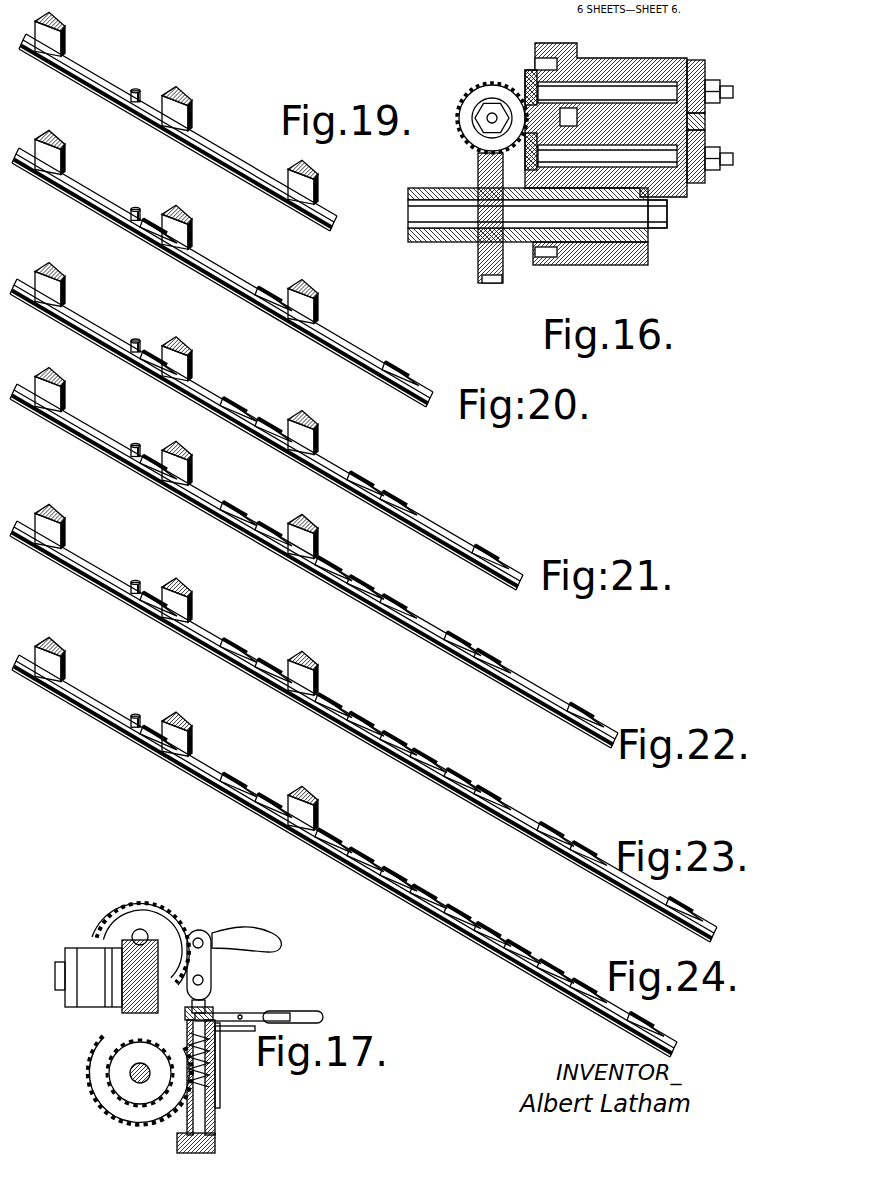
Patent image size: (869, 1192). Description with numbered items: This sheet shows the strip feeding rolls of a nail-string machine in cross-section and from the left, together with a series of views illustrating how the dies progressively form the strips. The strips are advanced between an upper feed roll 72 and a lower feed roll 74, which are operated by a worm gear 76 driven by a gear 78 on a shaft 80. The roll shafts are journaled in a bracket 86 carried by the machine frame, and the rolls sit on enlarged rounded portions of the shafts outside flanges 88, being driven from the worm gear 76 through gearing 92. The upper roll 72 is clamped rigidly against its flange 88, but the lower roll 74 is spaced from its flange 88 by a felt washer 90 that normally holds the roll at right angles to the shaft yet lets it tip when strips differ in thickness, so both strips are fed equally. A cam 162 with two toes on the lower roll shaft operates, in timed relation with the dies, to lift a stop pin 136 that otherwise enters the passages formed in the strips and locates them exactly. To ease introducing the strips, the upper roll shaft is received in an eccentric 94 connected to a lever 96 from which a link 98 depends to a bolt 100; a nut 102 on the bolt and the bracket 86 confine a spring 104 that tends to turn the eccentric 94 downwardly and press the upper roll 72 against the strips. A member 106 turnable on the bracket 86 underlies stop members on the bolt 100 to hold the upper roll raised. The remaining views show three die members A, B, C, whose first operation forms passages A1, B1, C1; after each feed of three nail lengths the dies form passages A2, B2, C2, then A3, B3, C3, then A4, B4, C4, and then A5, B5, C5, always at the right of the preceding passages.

In FIG. 16, the upper feed roll 72 is at (708, 78).
In FIG. 16, the lower feed roll 74 is at (700, 185).
In FIG. 16, the worm gear 76 is at (485, 278).
In FIG. 17, the worm gear 76 is at (92, 1088).
In FIG. 16, the gear 78 is at (485, 88).
In FIG. 17, the gear 78 is at (112, 1005).
In FIG. 16, the shaft 80 is at (490, 120).
In FIG. 16, the bracket 86 is at (597, 60).
In FIG. 16, the flanges 88 is at (690, 62).
In FIG. 16, the felt washer 90 is at (705, 120).
In FIG. 16, the gearing 92 is at (527, 78).
In FIG. 16, the eccentric 94 is at (622, 72).
In FIG. 16, the cam 162 is at (614, 207).
In FIG. 19, the stop pin 136 is at (141, 90).
In FIG. 20, the stop pin 136 is at (140, 208).
In FIG. 21, the stop pin 136 is at (140, 340).
In FIG. 22, the stop pin 136 is at (157, 439).
In FIG. 23, the stop pin 136 is at (140, 582).
In FIG. 24, the stop pin 136 is at (140, 716).
In FIG. 17, the lever 96 is at (277, 941).
In FIG. 17, the link 98 is at (212, 966).
In FIG. 17, the bolt 100 is at (205, 1152).
In FIG. 17, the nut 102 is at (216, 1123).
In FIG. 17, the spring 104 is at (215, 1090).
In FIG. 17, the member 106 is at (263, 1016).
In FIG. 19, the die member A is at (66, 40).
In FIG. 20, the die member A is at (66, 150).
In FIG. 21, the die member A is at (66, 282).
In FIG. 22, the die member A is at (66, 388).
In FIG. 23, the die member A is at (66, 525).
In FIG. 24, the die member A is at (66, 656).
In FIG. 19, the die member B is at (190, 103).
In FIG. 20, the die member B is at (190, 222).
In FIG. 21, the die member B is at (190, 354).
In FIG. 22, the die member B is at (190, 459).
In FIG. 23, the die member B is at (190, 596).
In FIG. 24, the die member B is at (190, 730).
In FIG. 19, the die member C is at (316, 180).
In FIG. 20, the die member C is at (316, 298).
In FIG. 21, the die member C is at (316, 428).
In FIG. 22, the die member C is at (316, 532).
In FIG. 23, the die member C is at (316, 669).
In FIG. 24, the die member C is at (316, 804).
In FIG. 20, the passage A1 is at (155, 224).
In FIG. 21, the passage A1 is at (235, 402).
In FIG. 22, the passage A1 is at (330, 561).
In FIG. 23, the passage A1 is at (425, 753).
In FIG. 24, the passage A1 is at (519, 944).
In FIG. 21, the passage A2 is at (155, 355).
In FIG. 22, the passage A2 is at (235, 506).
In FIG. 23, the passage A2 is at (330, 698).
In FIG. 24, the passage A2 is at (425, 889).
In FIG. 22, the passage A3 is at (155, 460).
In FIG. 23, the passage A3 is at (235, 643).
In FIG. 24, the passage A3 is at (330, 833).
In FIG. 23, the passage A4 is at (155, 597).
In FIG. 24, the passage A4 is at (235, 777).
In FIG. 24, the passage A5 is at (155, 730).
In FIG. 20, the passage B1 is at (268, 291).
In FIG. 21, the passage B1 is at (362, 476).
In FIG. 22, the passage B1 is at (459, 636).
In FIG. 23, the passage B1 is at (552, 827).
In FIG. 24, the passage B1 is at (642, 1017).
In FIG. 21, the passage B2 is at (270, 422).
In FIG. 22, the passage B2 is at (362, 580).
In FIG. 23, the passage B2 is at (459, 773).
In FIG. 24, the passage B2 is at (552, 964).
In FIG. 22, the passage B3 is at (270, 526).
In FIG. 23, the passage B3 is at (362, 717).
In FIG. 24, the passage B3 is at (459, 909).
In FIG. 23, the passage B4 is at (270, 663).
In FIG. 24, the passage B4 is at (362, 852).
In FIG. 24, the passage B5 is at (270, 798).
In FIG. 20, the passage C1 is at (398, 368).
In FIG. 21, the passage C1 is at (488, 551).
In FIG. 22, the passage C1 is at (582, 708).
In FIG. 23, the passage C1 is at (681, 902).
In FIG. 21, the passage C2 is at (395, 496).
In FIG. 22, the passage C2 is at (489, 654).
In FIG. 23, the passage C2 is at (585, 846).
In FIG. 22, the passage C3 is at (395, 599).
In FIG. 23, the passage C3 is at (489, 790).
In FIG. 24, the passage C3 is at (597, 980).
In FIG. 23, the passage C4 is at (395, 736).
In FIG. 24, the passage C4 is at (489, 927).
In FIG. 24, the passage C5 is at (395, 872).